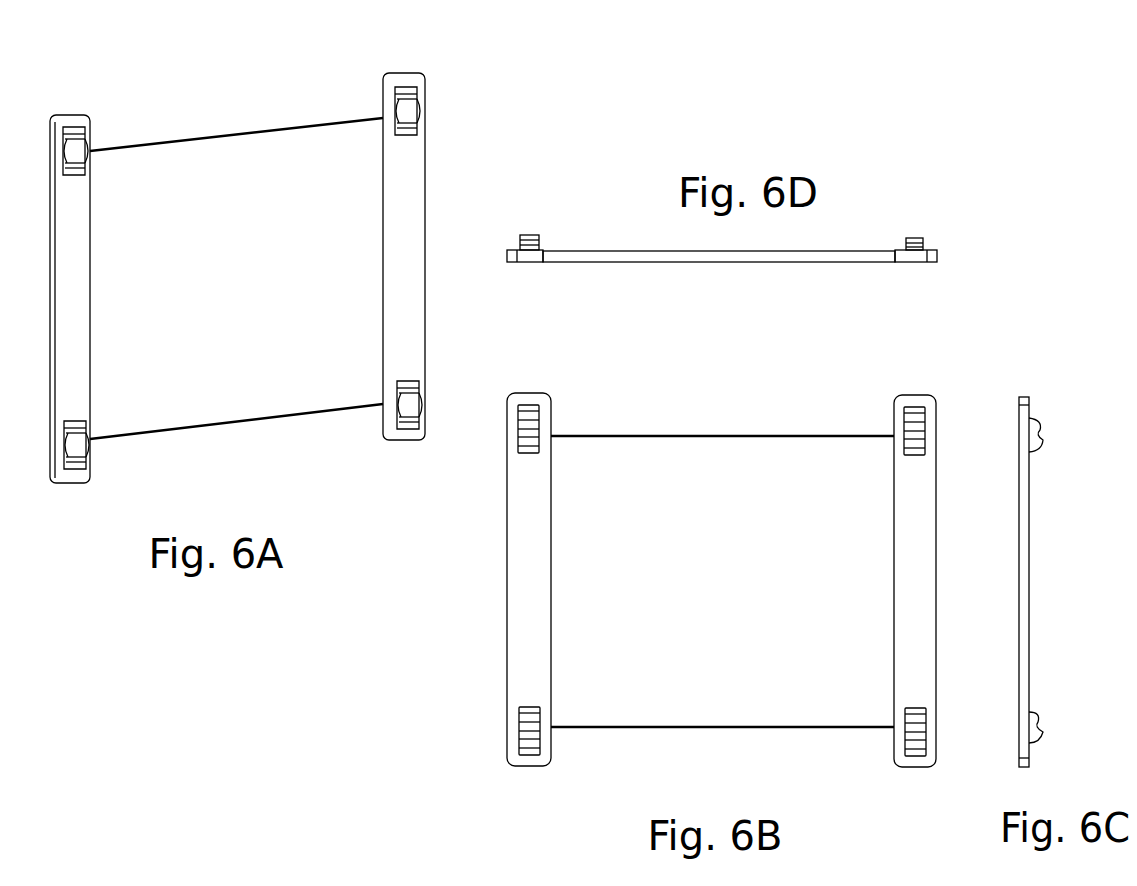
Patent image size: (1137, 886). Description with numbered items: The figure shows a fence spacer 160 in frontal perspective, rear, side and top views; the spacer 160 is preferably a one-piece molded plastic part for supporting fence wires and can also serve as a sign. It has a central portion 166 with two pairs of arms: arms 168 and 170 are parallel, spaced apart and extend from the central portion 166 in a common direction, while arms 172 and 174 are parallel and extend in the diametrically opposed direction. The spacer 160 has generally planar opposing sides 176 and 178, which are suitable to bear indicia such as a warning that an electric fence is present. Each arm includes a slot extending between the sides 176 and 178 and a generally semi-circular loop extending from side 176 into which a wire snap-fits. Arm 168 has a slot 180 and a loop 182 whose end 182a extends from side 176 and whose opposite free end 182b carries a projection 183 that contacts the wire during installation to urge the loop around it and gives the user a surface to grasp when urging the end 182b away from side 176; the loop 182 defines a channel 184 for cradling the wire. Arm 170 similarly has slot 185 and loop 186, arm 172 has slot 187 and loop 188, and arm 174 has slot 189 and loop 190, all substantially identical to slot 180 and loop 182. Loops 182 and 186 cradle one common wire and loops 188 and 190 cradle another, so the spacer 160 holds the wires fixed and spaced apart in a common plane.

In FIG. 6A, the spacer 160 is at (473, 162).
In FIG. 6A, the central portion 166 is at (388, 222).
In FIG. 6A, the arm 168 is at (53, 117).
In FIG. 6B, the arm 168 is at (938, 398).
In FIG. 6A, the arm 170 is at (418, 73).
In FIG. 6B, the arm 170 is at (528, 393).
In FIG. 6A, the arm 172 is at (78, 483).
In FIG. 6B, the arm 172 is at (903, 767).
In FIG. 6A, the arm 174 is at (412, 443).
In FIG. 6B, the arm 174 is at (508, 753).
In FIG. 6A, the side 176 is at (222, 287).
In FIG. 6C, the side 176 is at (1030, 612).
In FIG. 6B, the side 178 is at (720, 590).
In FIG. 6C, the side 178 is at (1018, 570).
In FIG. 6B, the slot 180 is at (907, 423).
In FIG. 6A, the loop 182 is at (78, 147).
In FIG. 6D, the loop 182 is at (917, 237).
In FIG. 6B, the loop 182 is at (913, 422).
In FIG. 6C, the loop 182 is at (1053, 413).
In FIG. 6A, the end 182a is at (72, 128).
In FIG. 6C, the end 182a is at (1032, 415).
In FIG. 6C, the free end 182b is at (1032, 452).
In FIG. 6C, the projection 183 is at (1038, 448).
In FIG. 6C, the channel 184 is at (1042, 426).
In FIG. 6B, the slot 185 is at (540, 422).
In FIG. 6A, the loop 186 is at (388, 103).
In FIG. 6D, the loop 186 is at (530, 233).
In FIG. 6B, the loop 186 is at (518, 427).
In FIG. 6B, the slot 187 is at (905, 740).
In FIG. 6A, the loop 188 is at (85, 447).
In FIG. 6B, the loop 188 is at (913, 745).
In FIG. 6C, the loop 188 is at (1042, 732).
In FIG. 6B, the slot 189 is at (538, 738).
In FIG. 6A, the loop 190 is at (410, 407).
In FIG. 6B, the loop 190 is at (530, 747).